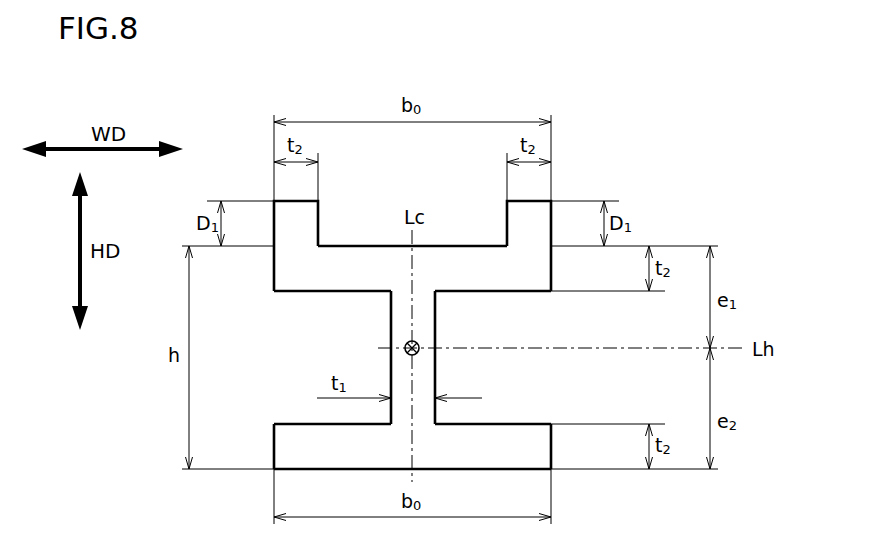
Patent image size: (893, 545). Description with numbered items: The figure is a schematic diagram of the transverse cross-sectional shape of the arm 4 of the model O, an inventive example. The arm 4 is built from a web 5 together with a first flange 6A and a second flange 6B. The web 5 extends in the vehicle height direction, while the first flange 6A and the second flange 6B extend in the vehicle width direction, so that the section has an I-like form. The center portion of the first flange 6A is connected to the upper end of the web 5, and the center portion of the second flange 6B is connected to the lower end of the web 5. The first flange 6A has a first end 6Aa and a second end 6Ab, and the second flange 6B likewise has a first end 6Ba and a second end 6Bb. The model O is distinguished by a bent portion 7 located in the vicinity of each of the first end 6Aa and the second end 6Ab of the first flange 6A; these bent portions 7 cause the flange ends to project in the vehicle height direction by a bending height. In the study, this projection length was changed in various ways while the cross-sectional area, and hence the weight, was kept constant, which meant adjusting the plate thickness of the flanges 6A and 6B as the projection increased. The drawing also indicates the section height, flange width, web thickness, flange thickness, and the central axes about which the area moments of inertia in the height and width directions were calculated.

The arm 4 is at (680, 218).
The web 5 is at (393, 335).
The first flange 6A is at (466, 255).
The first end of the first flange 6Aa is at (530, 201).
The second end of the first flange 6Ab is at (297, 201).
The second flange 6B is at (287, 432).
The first end of the second flange 6Ba is at (552, 448).
The second end of the second flange 6Bb is at (273, 448).
The bent portion 7 is at (292, 268).